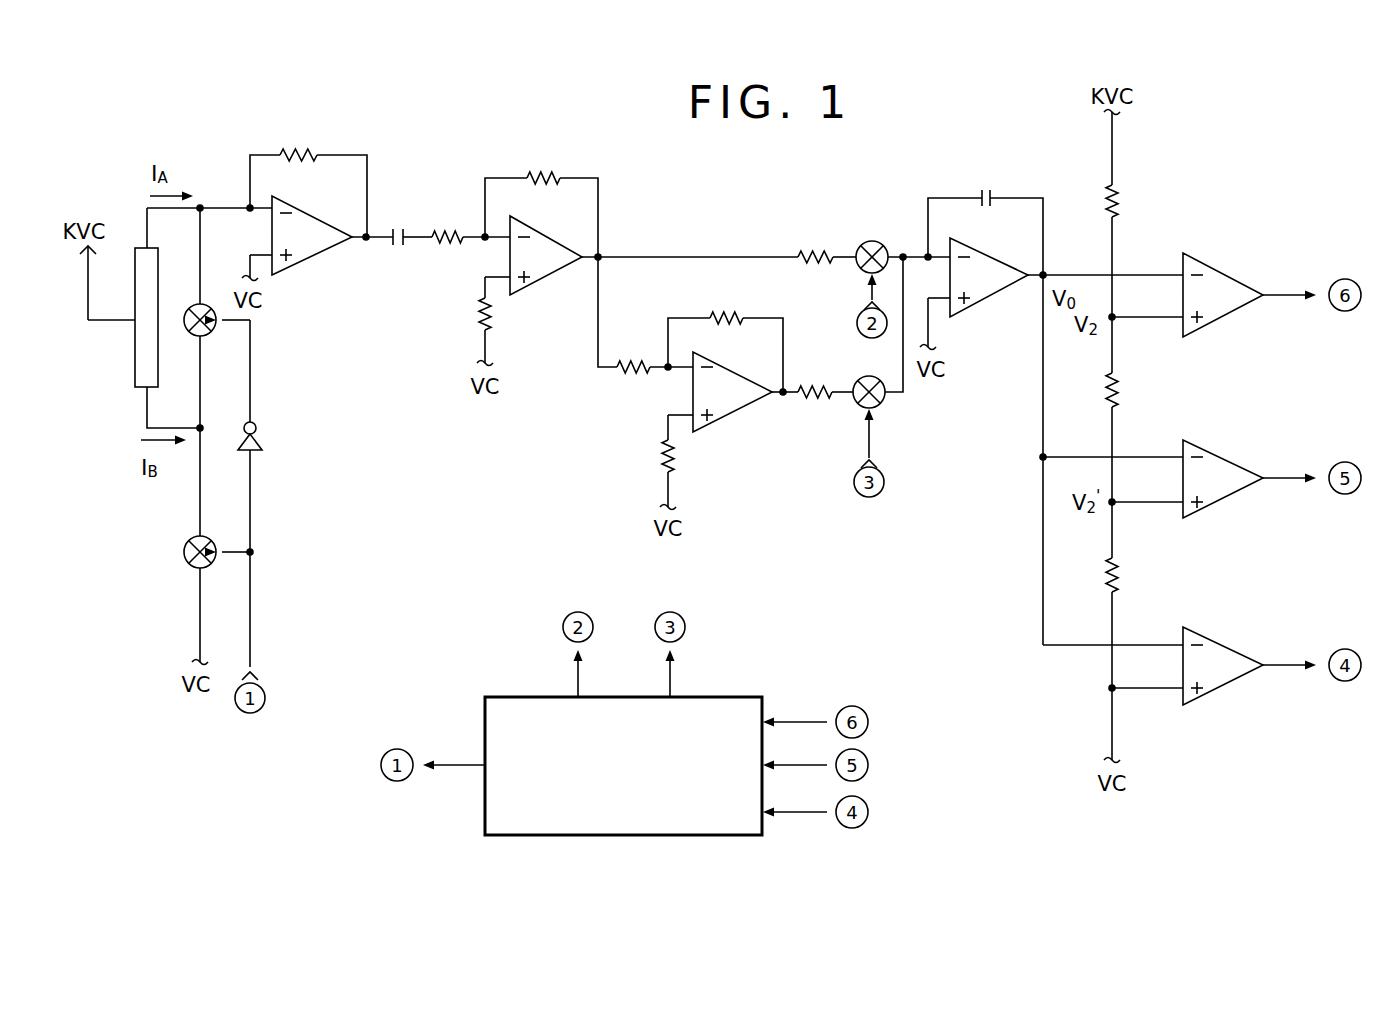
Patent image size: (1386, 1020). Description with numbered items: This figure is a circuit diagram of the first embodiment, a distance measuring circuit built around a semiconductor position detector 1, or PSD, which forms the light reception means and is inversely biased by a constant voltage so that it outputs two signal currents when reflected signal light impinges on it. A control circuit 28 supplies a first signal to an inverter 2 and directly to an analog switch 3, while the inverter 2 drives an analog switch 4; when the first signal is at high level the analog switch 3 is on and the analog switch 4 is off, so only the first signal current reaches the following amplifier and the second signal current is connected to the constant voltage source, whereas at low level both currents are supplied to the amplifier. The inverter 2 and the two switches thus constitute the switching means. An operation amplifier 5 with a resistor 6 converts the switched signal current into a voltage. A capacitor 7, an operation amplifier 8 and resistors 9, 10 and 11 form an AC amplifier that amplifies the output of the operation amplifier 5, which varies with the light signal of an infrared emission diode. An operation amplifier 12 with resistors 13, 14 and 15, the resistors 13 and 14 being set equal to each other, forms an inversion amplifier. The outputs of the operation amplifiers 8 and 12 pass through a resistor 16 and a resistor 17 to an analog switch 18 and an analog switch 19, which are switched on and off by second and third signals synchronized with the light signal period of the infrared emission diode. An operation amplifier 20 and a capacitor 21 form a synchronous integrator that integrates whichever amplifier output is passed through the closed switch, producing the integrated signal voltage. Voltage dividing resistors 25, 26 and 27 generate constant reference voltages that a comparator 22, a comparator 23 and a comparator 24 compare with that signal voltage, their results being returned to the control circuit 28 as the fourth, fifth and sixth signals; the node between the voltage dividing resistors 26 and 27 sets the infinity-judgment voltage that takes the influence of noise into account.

The semiconductor position detector 1 is at (133, 362).
The inverter 2 is at (258, 428).
The analog switch 3 is at (185, 559).
The analog switch 4 is at (195, 335).
The operation amplifier 5 is at (317, 258).
The resistor 6 is at (304, 153).
The capacitor 7 is at (402, 222).
The operation amplifier 8 is at (545, 283).
The resistor 9 is at (451, 246).
The resistor 10 is at (553, 174).
The resistor 11 is at (478, 320).
The operation amplifier 12 is at (727, 418).
The resistor 13 is at (626, 375).
The resistor 14 is at (735, 316).
The resistor 15 is at (655, 462).
The resistor 16 is at (812, 247).
The resistor 17 is at (813, 405).
The analog switch 18 is at (877, 238).
The analog switch 19 is at (856, 375).
The operation amplifier 20 is at (978, 303).
The capacitor 21 is at (984, 190).
The comparator 22 is at (1225, 643).
The comparator 23 is at (1218, 455).
The comparator 24 is at (1215, 268).
The voltage dividing resistor 25 is at (1124, 578).
The voltage dividing resistor 26 is at (1124, 391).
The voltage dividing resistor 27 is at (1122, 196).
The control circuit 28 is at (603, 838).